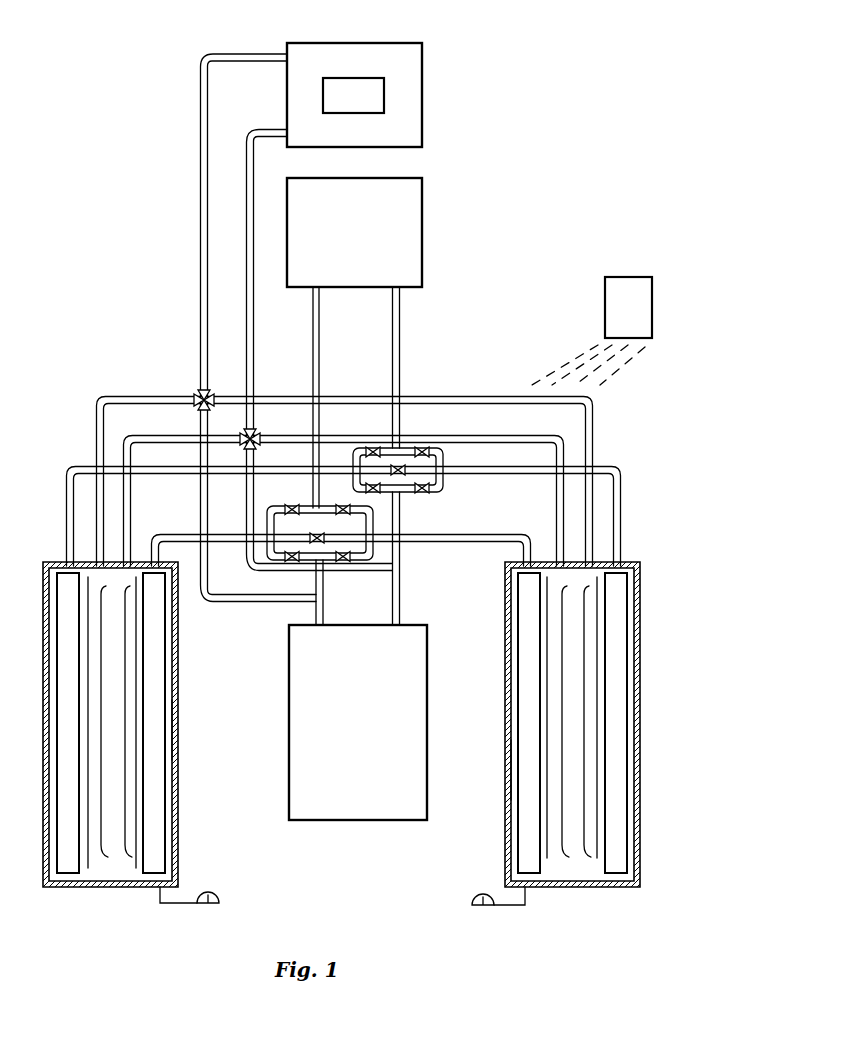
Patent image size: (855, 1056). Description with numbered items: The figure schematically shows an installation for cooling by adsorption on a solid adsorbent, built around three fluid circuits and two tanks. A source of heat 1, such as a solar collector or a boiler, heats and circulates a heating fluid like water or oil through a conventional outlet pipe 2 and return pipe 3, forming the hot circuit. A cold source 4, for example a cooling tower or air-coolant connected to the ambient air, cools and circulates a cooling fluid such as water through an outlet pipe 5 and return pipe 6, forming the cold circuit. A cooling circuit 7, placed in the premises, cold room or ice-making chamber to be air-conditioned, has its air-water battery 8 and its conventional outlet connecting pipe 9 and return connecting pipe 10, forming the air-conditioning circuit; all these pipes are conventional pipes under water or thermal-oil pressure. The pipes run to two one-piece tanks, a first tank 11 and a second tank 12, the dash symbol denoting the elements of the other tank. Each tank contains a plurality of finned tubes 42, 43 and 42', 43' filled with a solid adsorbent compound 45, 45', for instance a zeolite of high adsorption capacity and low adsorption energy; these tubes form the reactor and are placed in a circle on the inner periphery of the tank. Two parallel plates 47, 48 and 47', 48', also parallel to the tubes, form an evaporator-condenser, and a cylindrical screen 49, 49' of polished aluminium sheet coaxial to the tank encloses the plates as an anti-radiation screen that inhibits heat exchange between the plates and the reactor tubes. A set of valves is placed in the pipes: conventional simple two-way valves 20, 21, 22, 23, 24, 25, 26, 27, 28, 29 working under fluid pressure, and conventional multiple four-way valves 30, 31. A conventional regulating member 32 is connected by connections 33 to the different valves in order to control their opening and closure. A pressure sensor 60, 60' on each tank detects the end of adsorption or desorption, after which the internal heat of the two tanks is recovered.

The source of heat 1 is at (408, 237).
The outlet pipe 2 is at (320, 317).
The return pipe 3 is at (400, 316).
The cold source 4 is at (347, 810).
The outlet pipe 5 is at (400, 603).
The return pipe 6 is at (314, 612).
The cooling circuit 7 is at (412, 70).
The air-water battery 8 is at (378, 97).
The outlet connecting pipe 9 is at (200, 137).
The return connecting pipe 10 is at (248, 167).
The first tank 11 is at (112, 888).
The second tank 12 is at (578, 890).
The simple valve 20 is at (402, 466).
The simple valve 21 is at (425, 450).
The simple valve 22 is at (428, 488).
The simple valve 23 is at (376, 490).
The simple valve 24 is at (372, 447).
The simple valve 25 is at (290, 505).
The simple valve 26 is at (344, 506).
The simple valve 27 is at (343, 561).
The simple valve 28 is at (290, 561).
The simple valve 29 is at (310, 535).
The multiple valve 30 is at (252, 436).
The multiple valve 31 is at (200, 394).
The regulating member 32 is at (632, 290).
The connections 33 is at (603, 358).
The tube 42 is at (641, 723).
The tube 42' is at (62, 755).
The tube 43 is at (483, 770).
The tube 43' is at (198, 766).
The solid adsorbent compound 45 is at (598, 723).
The solid adsorbent compound 45' is at (156, 723).
The plate 47 is at (509, 721).
The plate 47' is at (164, 725).
The plate 48 is at (630, 721).
The plate 48' is at (176, 721).
The cylindrical screen 49 is at (524, 717).
The cylindrical screen 49' is at (164, 722).
The pressure sensor 60 is at (482, 915).
The pressure sensor 60' is at (199, 915).